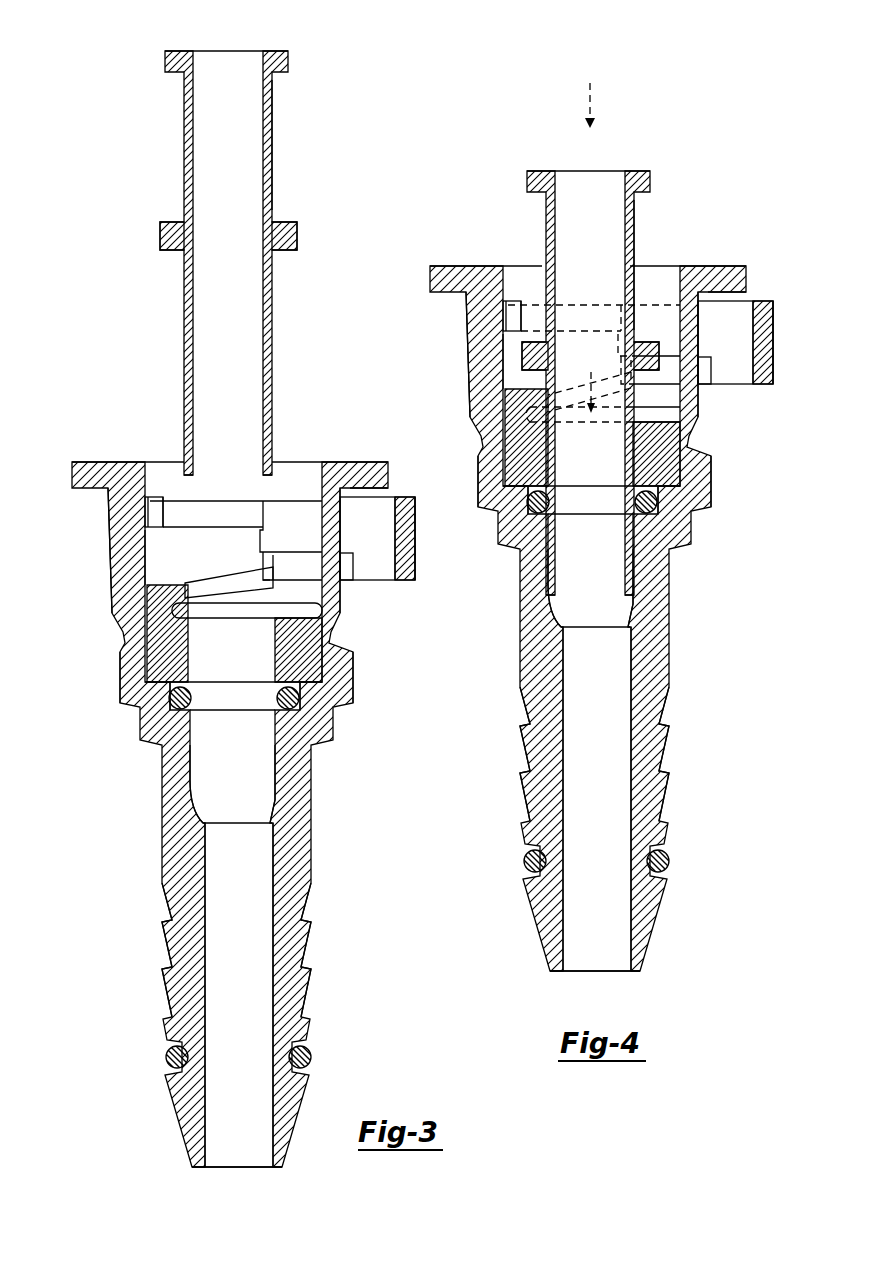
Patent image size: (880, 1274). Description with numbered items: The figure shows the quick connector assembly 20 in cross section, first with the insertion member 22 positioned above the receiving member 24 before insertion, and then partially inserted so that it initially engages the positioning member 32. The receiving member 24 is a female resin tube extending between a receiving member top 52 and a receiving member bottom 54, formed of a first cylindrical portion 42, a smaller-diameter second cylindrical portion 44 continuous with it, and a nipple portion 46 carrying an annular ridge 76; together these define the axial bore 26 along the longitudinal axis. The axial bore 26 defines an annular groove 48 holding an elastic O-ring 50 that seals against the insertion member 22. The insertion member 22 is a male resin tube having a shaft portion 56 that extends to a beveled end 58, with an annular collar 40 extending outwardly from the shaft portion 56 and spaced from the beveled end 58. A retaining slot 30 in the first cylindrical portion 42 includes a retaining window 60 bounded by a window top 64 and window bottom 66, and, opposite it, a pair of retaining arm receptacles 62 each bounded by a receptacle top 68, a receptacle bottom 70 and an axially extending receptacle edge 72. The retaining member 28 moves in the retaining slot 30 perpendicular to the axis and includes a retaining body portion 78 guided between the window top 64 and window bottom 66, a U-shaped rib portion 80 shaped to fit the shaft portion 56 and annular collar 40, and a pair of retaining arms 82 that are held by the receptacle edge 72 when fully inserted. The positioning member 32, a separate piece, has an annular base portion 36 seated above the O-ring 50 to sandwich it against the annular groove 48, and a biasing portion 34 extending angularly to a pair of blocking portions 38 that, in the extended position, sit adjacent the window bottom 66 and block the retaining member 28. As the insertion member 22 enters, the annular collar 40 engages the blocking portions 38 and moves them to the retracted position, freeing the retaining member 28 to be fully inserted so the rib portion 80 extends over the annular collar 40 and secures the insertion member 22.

In FIG. 3, the quick connector assembly 20 is at (120, 80).
In FIG. 4, the quick connector assembly 20 is at (685, 73).
In FIG. 3, the insertion member 22 is at (268, 45).
In FIG. 4, the insertion member 22 is at (630, 165).
In FIG. 3, the receiving member 24 is at (155, 774).
In FIG. 4, the receiving member 24 is at (678, 572).
In FIG. 3, the axial bore 26 is at (240, 894).
In FIG. 4, the axial bore 26 is at (600, 690).
In FIG. 3, the retaining member 28 is at (418, 588).
In FIG. 4, the retaining member 28 is at (780, 390).
In FIG. 3, the retaining slot 30 is at (346, 541).
In FIG. 4, the retaining slot 30 is at (704, 348).
In FIG. 3, the positioning member 32 is at (135, 615).
In FIG. 4, the positioning member 32 is at (700, 446).
In FIG. 3, the biasing portion 34 is at (218, 578).
In FIG. 4, the biasing portion 34 is at (580, 408).
In FIG. 3, the base portion 36 is at (150, 680).
In FIG. 4, the base portion 36 is at (675, 428).
In FIG. 3, the blocking portions 38 is at (288, 588).
In FIG. 4, the blocking portions 38 is at (640, 393).
In FIG. 3, the annular collar 40 is at (298, 238).
In FIG. 4, the annular collar 40 is at (648, 318).
In FIG. 3, the first cylindrical portion 42 is at (110, 590).
In FIG. 4, the first cylindrical portion 42 is at (475, 395).
In FIG. 3, the second cylindrical portion 44 is at (340, 684).
In FIG. 4, the second cylindrical portion 44 is at (705, 480).
In FIG. 3, the nipple portion 46 is at (290, 822).
In FIG. 4, the nipple portion 46 is at (650, 625).
In FIG. 3, the annular groove 48 is at (160, 720).
In FIG. 4, the annular groove 48 is at (650, 520).
In FIG. 3, the elastic O-ring 50 is at (172, 706).
In FIG. 4, the elastic O-ring 50 is at (655, 500).
In FIG. 3, the receiving member top 52 is at (88, 462).
In FIG. 4, the receiving member top 52 is at (450, 264).
In FIG. 3, the receiving member bottom 54 is at (282, 1168).
In FIG. 4, the receiving member bottom 54 is at (640, 973).
In FIG. 3, the shaft portion 56 is at (273, 112).
In FIG. 4, the shaft portion 56 is at (636, 205).
In FIG. 3, the beveled end 58 is at (287, 470).
In FIG. 4, the beveled end 58 is at (645, 598).
In FIG. 3, the retaining window 60 is at (310, 497).
In FIG. 4, the retaining window 60 is at (650, 320).
In FIG. 3, the retaining arm receptacles 62 is at (146, 505).
In FIG. 4, the retaining arm receptacles 62 is at (508, 311).
In FIG. 3, the window top 64 is at (362, 505).
In FIG. 4, the window top 64 is at (712, 310).
In FIG. 3, the window bottom 66 is at (357, 582).
In FIG. 4, the window bottom 66 is at (710, 378).
In FIG. 3, the receptacle top 68 is at (160, 497).
In FIG. 4, the receptacle top 68 is at (520, 305).
In FIG. 3, the receptacle bottom 70 is at (153, 540).
In FIG. 4, the receptacle bottom 70 is at (510, 350).
In FIG. 3, the receptacle edge 72 is at (150, 497).
In FIG. 4, the receptacle edge 72 is at (512, 320).
In FIG. 3, the annular ridge 76 is at (312, 920).
In FIG. 4, the annular ridge 76 is at (670, 725).
In FIG. 3, the retaining body portion 78 is at (400, 497).
In FIG. 4, the retaining body portion 78 is at (760, 316).
In FIG. 3, the rib portion 80 is at (290, 517).
In FIG. 4, the rib portion 80 is at (663, 320).
In FIG. 3, the retaining arms 82 is at (160, 512).
In FIG. 4, the retaining arms 82 is at (510, 322).